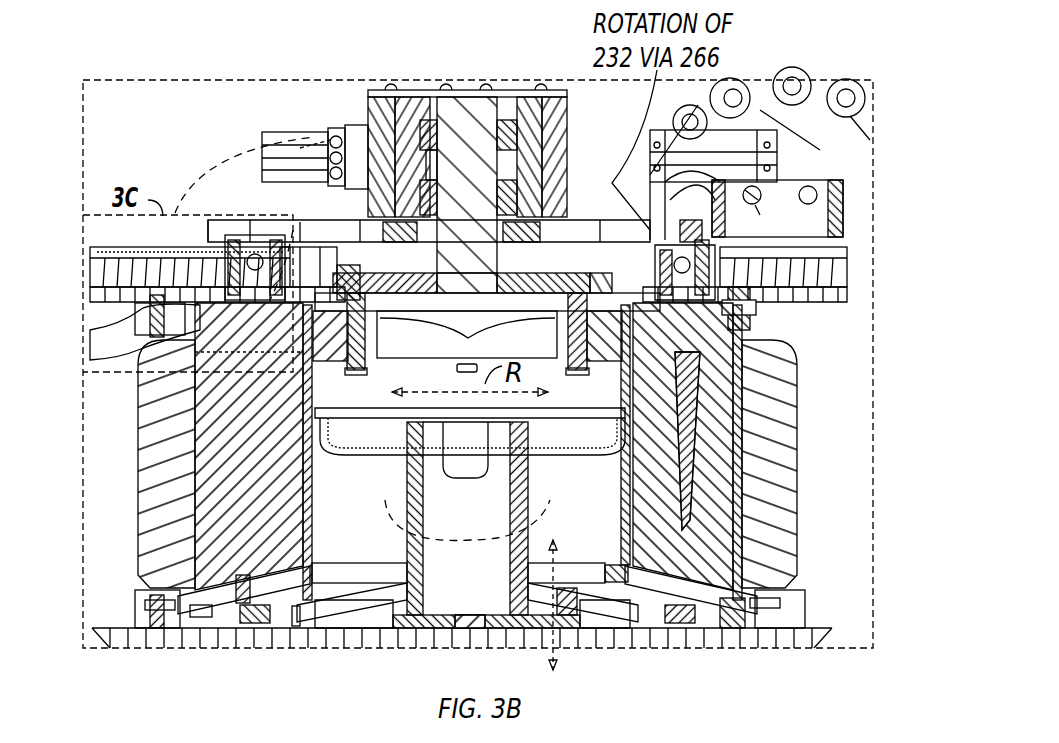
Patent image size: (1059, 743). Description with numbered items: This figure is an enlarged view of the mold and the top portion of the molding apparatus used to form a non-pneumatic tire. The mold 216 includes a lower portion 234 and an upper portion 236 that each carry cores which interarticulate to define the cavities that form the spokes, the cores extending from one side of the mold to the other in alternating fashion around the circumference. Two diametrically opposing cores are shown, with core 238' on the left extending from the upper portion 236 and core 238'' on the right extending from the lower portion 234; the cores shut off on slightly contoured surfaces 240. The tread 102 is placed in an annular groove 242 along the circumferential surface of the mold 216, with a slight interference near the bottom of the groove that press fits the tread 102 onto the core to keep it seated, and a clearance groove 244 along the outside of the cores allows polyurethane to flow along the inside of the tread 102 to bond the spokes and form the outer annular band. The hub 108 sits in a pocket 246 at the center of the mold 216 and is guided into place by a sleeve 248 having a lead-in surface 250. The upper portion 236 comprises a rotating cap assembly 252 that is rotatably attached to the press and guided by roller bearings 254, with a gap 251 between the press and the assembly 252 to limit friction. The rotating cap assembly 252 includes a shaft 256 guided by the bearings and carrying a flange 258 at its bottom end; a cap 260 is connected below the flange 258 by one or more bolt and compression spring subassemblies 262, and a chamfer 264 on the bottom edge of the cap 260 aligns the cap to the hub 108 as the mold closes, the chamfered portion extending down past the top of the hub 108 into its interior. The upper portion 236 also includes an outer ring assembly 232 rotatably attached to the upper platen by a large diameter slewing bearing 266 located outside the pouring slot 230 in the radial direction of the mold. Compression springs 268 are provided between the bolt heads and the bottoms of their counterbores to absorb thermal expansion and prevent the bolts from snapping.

The tread 102 is at (129, 455).
The hub 108 is at (300, 520).
The mold 216 is at (750, 463).
The pouring slot 230 is at (370, 348).
The outer ring assembly 232 is at (195, 383).
The lower portion 234 is at (778, 602).
The upper portion 236 is at (773, 330).
The core 238' is at (249, 446).
The core 238'' is at (683, 446).
The slightly contoured surfaces 240 is at (750, 312).
The annular groove 242 is at (135, 338).
The clearance groove 244 is at (225, 520).
The pocket 246 is at (566, 575).
The sleeve 248 is at (472, 525).
The lead-in surface 250 is at (530, 440).
The gap 251 is at (328, 262).
The rotating cap assembly 252 is at (467, 185).
The roller bearings 254 is at (410, 172).
The shaft 256 is at (472, 262).
The flange 258 is at (588, 282).
The cap 260 is at (610, 352).
The bolt and compression spring subassemblies 262 is at (467, 345).
The chamfer 264 is at (317, 352).
The slewing bearing 266 is at (250, 262).
The compression springs 268 is at (140, 322).